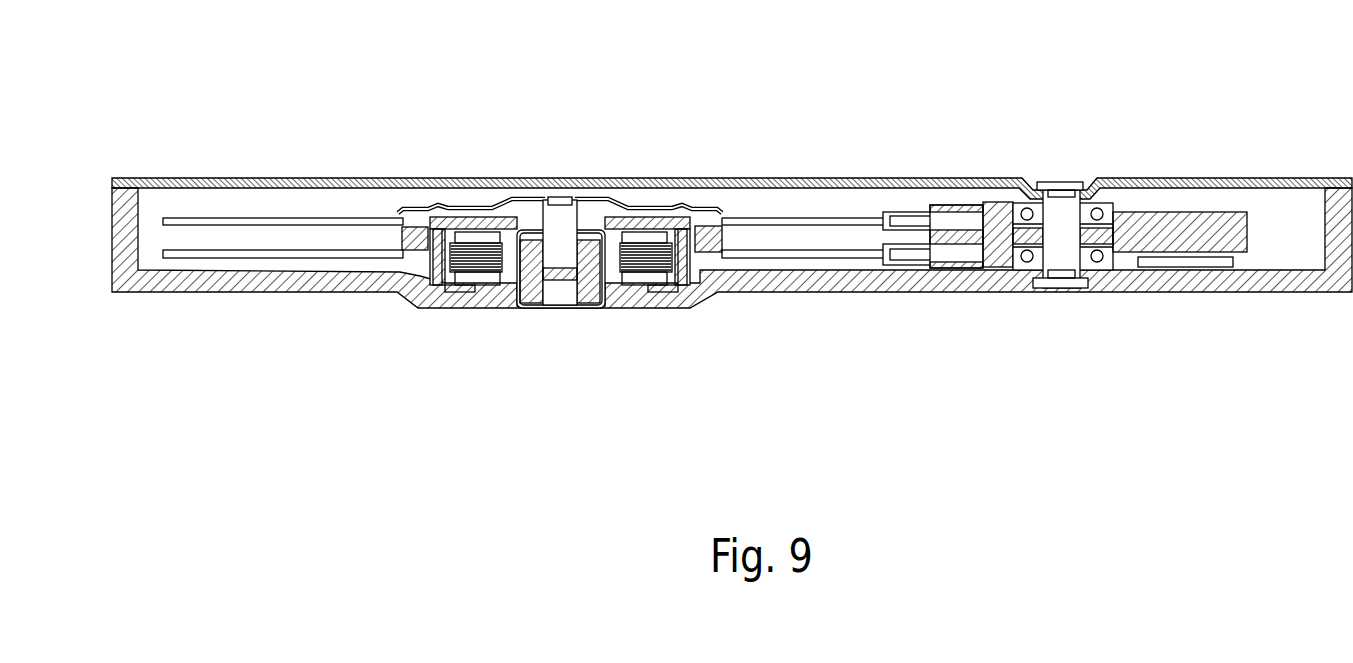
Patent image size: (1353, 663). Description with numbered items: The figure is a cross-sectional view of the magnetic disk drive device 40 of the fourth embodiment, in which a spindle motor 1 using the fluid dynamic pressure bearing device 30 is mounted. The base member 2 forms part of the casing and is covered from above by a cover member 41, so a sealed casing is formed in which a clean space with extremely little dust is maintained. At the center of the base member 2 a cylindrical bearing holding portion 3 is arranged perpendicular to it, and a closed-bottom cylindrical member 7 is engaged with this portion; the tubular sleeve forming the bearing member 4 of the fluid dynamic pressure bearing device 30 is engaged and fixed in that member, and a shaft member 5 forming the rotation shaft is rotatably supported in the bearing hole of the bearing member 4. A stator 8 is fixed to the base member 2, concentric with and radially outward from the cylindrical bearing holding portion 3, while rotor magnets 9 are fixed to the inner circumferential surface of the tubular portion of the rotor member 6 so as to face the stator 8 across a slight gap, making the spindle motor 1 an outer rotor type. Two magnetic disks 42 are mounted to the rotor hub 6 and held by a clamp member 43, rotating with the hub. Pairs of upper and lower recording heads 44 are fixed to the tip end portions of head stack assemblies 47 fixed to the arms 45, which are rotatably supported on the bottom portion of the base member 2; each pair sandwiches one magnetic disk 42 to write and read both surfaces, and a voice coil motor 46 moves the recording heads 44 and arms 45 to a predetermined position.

The magnetic disk drive device 40 is at (732, 205).
The cover member 41 is at (283, 178).
The magnetic disks 42 is at (198, 218).
The clamp member 43 is at (503, 200).
The spindle motor 1 is at (620, 194).
The rotor member 6 is at (600, 195).
The recording heads 44 is at (890, 206).
The head stack assemblies 47 is at (915, 202).
The arms 45 is at (960, 205).
The voice coil motor 46 is at (1176, 212).
The base member 2 is at (845, 292).
The cylindrical bearing holding portion 3 is at (622, 288).
The bearing member 4 is at (600, 306).
The shaft member 5 is at (565, 298).
The closed-bottom cylindrical member 7 is at (505, 302).
The stator 8 is at (463, 300).
The rotor magnets 9 is at (683, 290).
The fluid dynamic pressure bearing device 30 is at (560, 258).